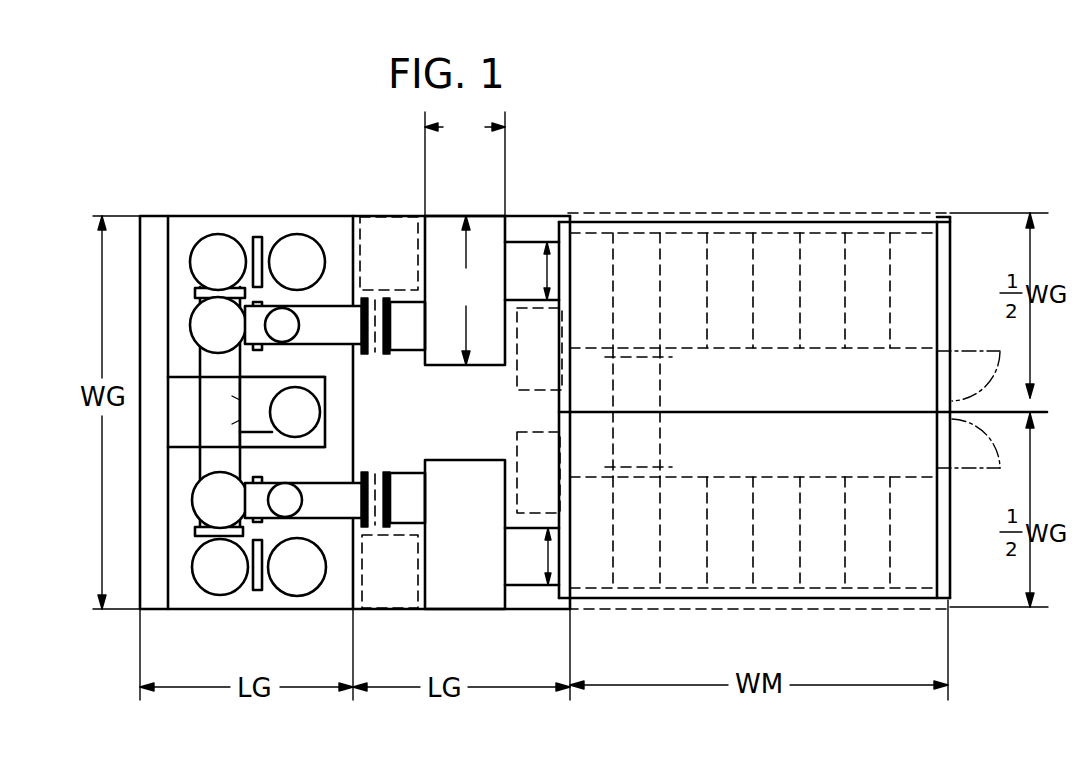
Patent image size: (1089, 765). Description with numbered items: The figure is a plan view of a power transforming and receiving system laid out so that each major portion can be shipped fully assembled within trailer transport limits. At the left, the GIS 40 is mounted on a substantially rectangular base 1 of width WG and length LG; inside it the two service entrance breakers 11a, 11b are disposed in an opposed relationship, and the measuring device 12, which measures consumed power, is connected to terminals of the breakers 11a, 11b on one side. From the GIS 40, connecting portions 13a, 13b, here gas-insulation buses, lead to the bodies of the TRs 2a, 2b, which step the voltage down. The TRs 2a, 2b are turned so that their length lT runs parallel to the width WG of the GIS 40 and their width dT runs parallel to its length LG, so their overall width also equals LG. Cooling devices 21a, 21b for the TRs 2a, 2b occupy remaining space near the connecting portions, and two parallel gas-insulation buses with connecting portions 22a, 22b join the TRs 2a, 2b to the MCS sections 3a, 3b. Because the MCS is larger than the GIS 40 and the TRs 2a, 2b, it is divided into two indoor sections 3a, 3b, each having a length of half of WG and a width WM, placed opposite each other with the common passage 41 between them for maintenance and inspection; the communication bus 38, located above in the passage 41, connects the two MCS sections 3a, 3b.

The base 1 is at (177, 216).
The breaker 11a is at (217, 237).
The breaker 11b is at (190, 598).
The measuring device 12 is at (325, 395).
The connecting portion 13a is at (365, 300).
The connecting portion 13b is at (382, 472).
The TR 2a is at (487, 193).
The TR 2b is at (466, 600).
The cooling device 21a is at (378, 216).
The cooling device 21b is at (517, 432).
The connecting portion 22a is at (527, 260).
The connecting portion 22b is at (532, 590).
The MCS section 3a is at (733, 222).
The MCS section 3b is at (678, 572).
The communication bus 38 is at (648, 445).
The GIS 40 is at (262, 216).
The common passage 41 is at (855, 445).